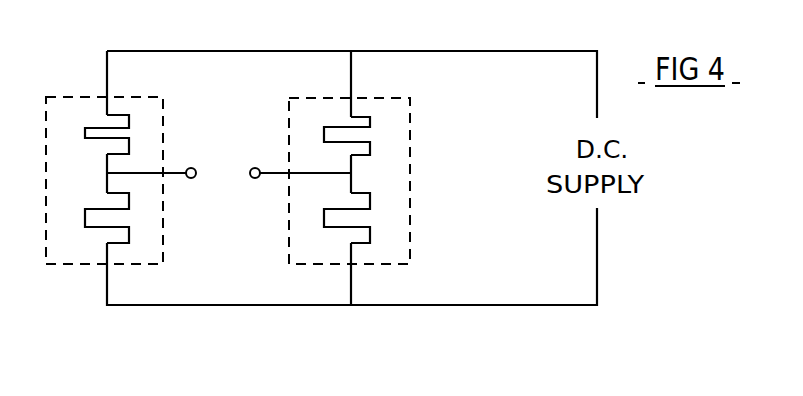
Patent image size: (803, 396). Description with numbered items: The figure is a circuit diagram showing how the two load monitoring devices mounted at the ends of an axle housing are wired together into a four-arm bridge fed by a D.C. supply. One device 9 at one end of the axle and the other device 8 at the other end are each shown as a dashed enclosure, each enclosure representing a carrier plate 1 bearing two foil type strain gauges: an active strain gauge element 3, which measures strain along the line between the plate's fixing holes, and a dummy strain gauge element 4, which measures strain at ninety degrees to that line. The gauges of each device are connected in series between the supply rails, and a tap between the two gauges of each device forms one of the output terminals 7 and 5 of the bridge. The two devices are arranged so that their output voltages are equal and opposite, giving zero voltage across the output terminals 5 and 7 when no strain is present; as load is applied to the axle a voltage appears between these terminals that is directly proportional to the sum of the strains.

The carrier plate 1 is at (70, 264).
The foil type strain gauge element 3 is at (85, 133).
The foil type strain gauge element 4 is at (85, 219).
The output terminal 5 is at (251, 168).
The output terminal 7 is at (191, 168).
The load monitoring device 8 is at (316, 92).
The load monitoring device 9 is at (86, 89).